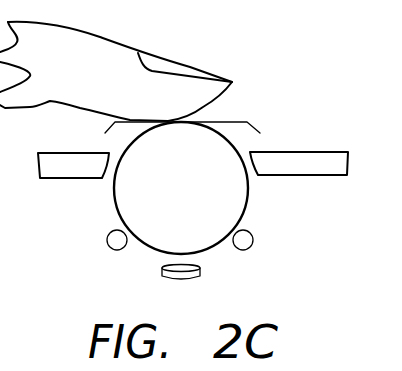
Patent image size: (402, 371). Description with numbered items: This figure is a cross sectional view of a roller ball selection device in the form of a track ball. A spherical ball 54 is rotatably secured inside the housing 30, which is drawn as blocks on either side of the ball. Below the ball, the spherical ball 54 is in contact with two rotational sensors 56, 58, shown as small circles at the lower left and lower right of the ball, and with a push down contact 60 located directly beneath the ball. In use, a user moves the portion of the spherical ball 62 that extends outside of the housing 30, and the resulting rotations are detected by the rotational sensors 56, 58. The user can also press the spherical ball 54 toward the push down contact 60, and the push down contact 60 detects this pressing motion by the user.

The portion of the spherical ball 62 is at (232, 117).
The housing 30 is at (298, 176).
The spherical ball 54 is at (147, 195).
The rotational sensor 56 is at (112, 247).
The rotational sensor 58 is at (245, 245).
The push down contact 60 is at (190, 278).